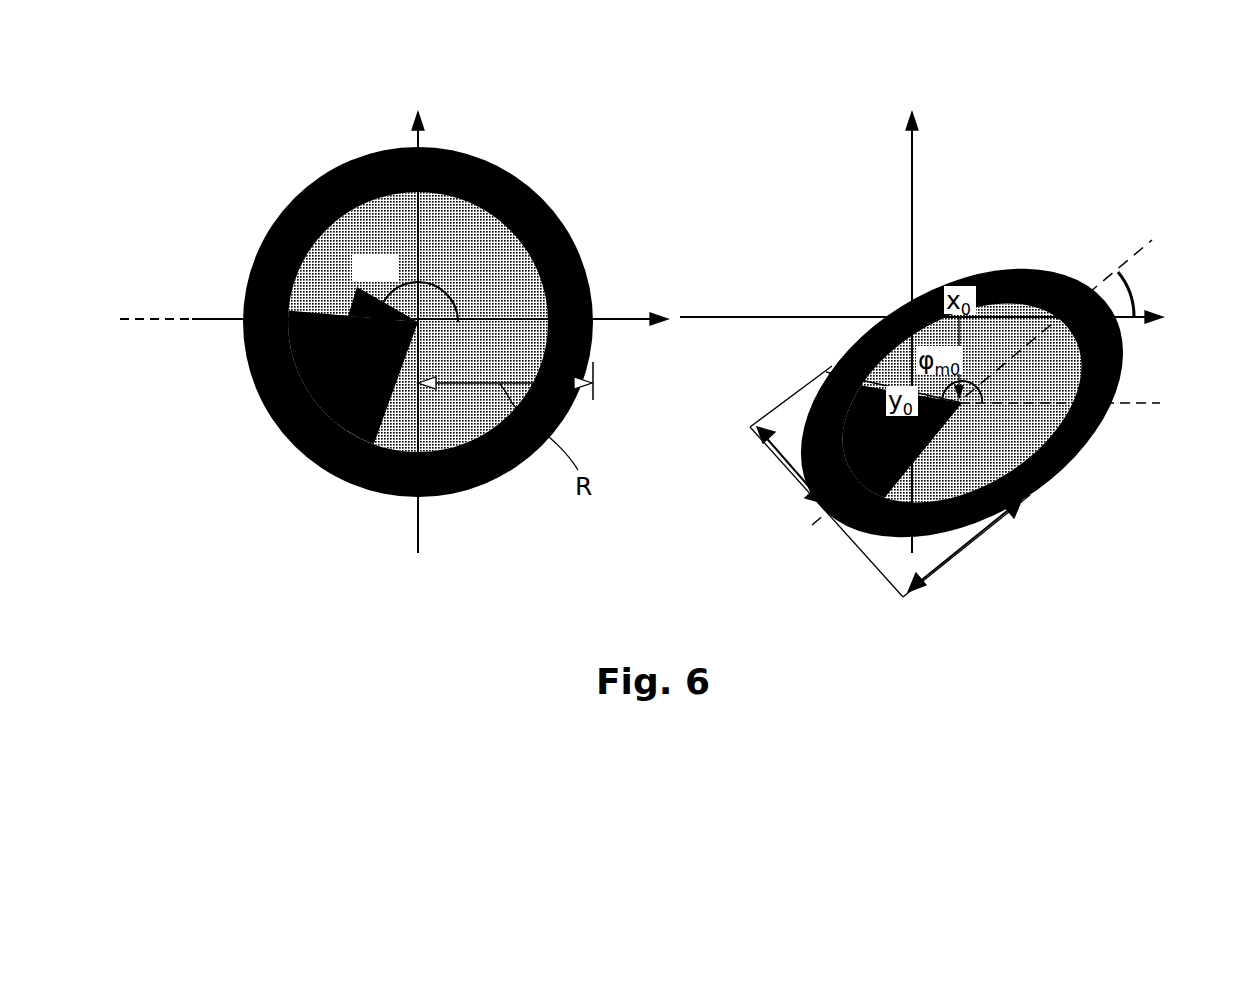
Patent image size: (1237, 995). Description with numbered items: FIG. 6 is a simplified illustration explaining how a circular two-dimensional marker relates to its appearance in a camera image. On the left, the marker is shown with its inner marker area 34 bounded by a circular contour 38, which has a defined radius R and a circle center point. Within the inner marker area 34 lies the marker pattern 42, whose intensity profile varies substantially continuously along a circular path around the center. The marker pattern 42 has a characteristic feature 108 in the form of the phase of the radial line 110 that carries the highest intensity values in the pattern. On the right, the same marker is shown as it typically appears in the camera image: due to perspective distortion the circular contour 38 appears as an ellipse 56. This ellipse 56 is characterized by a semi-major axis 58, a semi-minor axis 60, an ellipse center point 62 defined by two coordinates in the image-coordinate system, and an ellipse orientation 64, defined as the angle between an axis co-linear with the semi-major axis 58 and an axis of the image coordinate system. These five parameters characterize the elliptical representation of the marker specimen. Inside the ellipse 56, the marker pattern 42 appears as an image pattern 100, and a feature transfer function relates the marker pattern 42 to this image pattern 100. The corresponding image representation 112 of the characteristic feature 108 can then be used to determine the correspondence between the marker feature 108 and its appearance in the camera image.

The radial line 110 is at (142, 321).
The circular contour 38 is at (470, 178).
The inner marker area 34 is at (478, 245).
The characteristic feature 108 is at (457, 298).
The marker pattern 42 is at (335, 350).
The ellipse 56 is at (1048, 428).
The image pattern 100 is at (1045, 377).
The image representation 112 is at (985, 380).
The ellipse orientation 64 is at (1138, 290).
The semi-minor axis 60 is at (781, 456).
The semi-major axis 58 is at (976, 546).
The ellipse center point 62 is at (1008, 452).